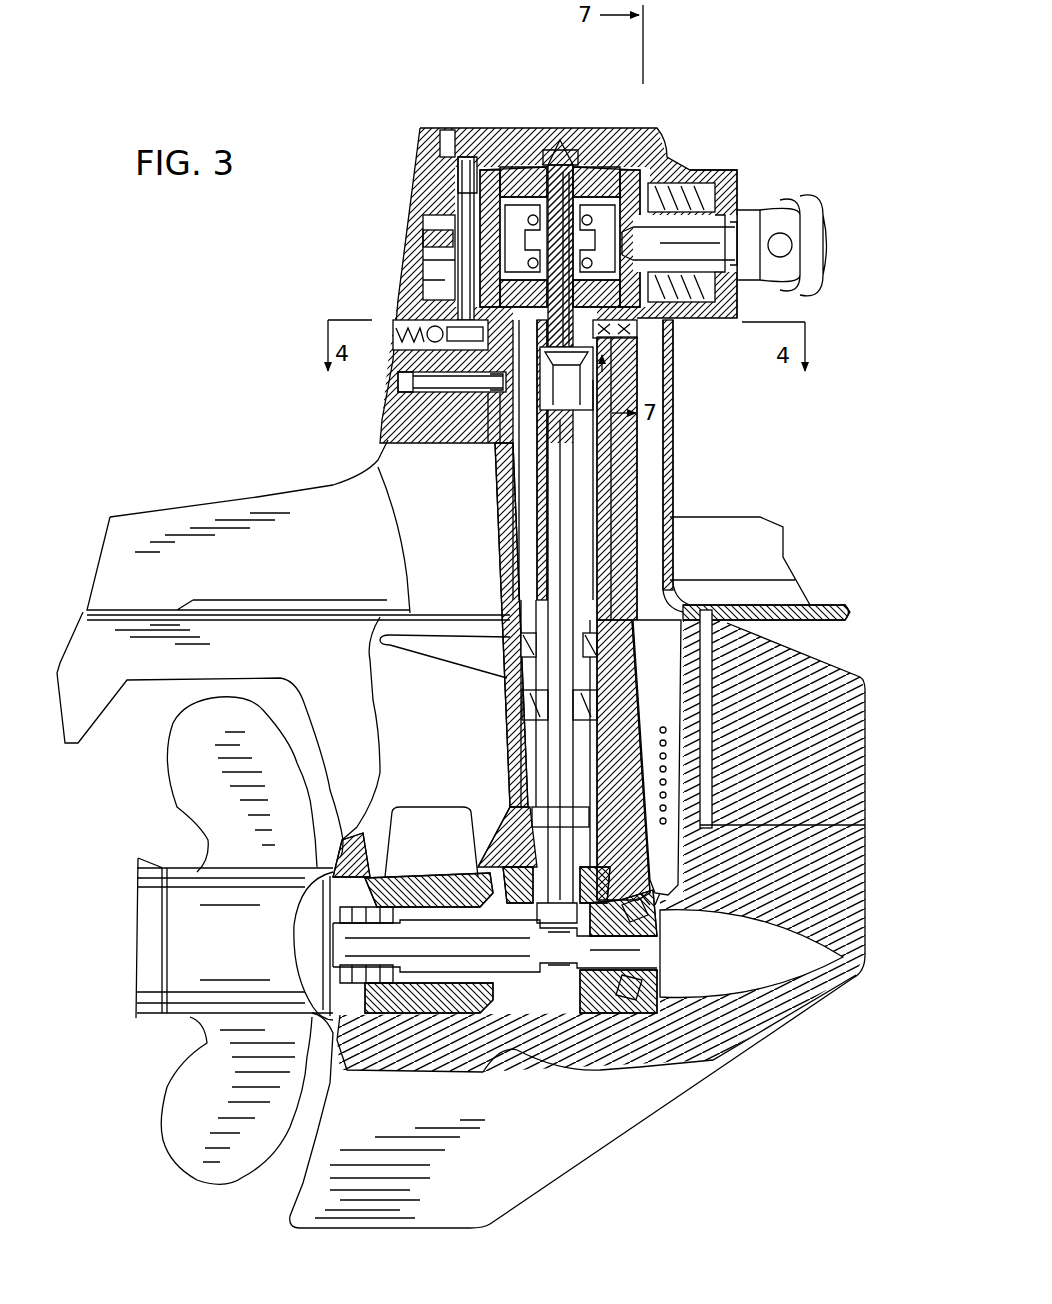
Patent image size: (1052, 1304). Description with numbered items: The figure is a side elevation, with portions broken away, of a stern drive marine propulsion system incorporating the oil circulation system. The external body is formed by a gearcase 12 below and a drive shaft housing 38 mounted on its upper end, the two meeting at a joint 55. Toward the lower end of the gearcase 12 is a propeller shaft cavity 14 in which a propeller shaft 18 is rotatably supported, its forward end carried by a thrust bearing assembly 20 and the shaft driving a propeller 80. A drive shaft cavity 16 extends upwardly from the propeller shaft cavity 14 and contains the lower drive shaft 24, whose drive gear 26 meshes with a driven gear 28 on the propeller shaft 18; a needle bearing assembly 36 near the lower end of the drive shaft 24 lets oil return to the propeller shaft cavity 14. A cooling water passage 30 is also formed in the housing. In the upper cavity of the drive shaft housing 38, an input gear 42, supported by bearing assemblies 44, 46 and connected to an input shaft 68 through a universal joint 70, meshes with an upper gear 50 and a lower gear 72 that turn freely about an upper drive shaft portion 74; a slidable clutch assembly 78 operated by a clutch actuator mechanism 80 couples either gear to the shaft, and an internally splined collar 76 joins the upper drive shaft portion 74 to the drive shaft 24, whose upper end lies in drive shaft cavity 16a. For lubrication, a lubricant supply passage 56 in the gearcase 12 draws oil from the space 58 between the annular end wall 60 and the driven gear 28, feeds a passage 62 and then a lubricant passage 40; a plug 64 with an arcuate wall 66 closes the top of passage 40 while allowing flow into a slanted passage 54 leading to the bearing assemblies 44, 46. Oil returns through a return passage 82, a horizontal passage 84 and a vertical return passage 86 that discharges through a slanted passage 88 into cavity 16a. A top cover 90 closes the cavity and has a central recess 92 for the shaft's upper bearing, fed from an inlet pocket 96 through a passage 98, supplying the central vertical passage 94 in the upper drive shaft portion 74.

The gearcase 12 is at (875, 737).
The propeller shaft cavity 14 is at (503, 1020).
The drive shaft cavity 16 is at (521, 700).
The drive shaft cavity 16a is at (595, 498).
The propeller shaft 18 is at (422, 922).
The thrust bearing assembly 20 is at (670, 986).
The drive shaft 24 is at (537, 741).
The drive gear 26 is at (487, 920).
The driven gear 28 is at (577, 1020).
The cooling water passage 30 is at (677, 667).
The needle bearing assembly 36 is at (523, 833).
The drive shaft housing 38 is at (692, 482).
The lubricant passage 40 is at (620, 447).
The input gear 42 is at (638, 222).
The bearing assembly 44 is at (700, 170).
The bearing assembly 46 is at (674, 170).
The upper gear 50 is at (485, 207).
The slanted passage 54 is at (680, 322).
The joint 55 is at (420, 610).
The lubricant supply passage 56 is at (620, 712).
The space 58 is at (633, 900).
The annular end wall 60 is at (627, 1023).
The passage 62 is at (620, 627).
The plug 64 is at (593, 401).
The arcuate wall 66 is at (605, 363).
The input shaft 68 is at (716, 175).
The universal joint 70 is at (788, 192).
The lower gear 72 is at (455, 284).
The upper drive shaft portion 74 is at (540, 165).
The internally splined collar 76 is at (605, 392).
The slidable clutch assembly 78 is at (497, 267).
The clutch actuator mechanism 80 is at (417, 236).
The return passage 82 is at (507, 380).
The horizontal passage 84 is at (497, 372).
The vertical return passage 86 is at (517, 483).
The slanted passage 88 is at (517, 578).
The top cover 90 is at (652, 120).
The central recess 92 is at (561, 147).
The central vertical passage 94 is at (573, 142).
The inlet pocket 96 is at (598, 150).
The passage 98 is at (583, 140).